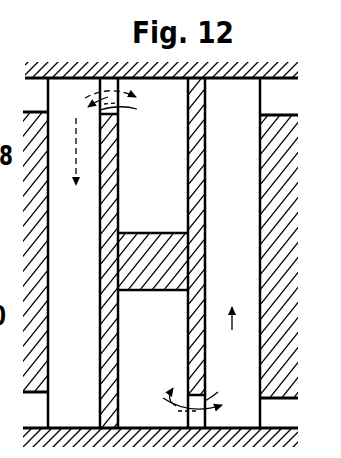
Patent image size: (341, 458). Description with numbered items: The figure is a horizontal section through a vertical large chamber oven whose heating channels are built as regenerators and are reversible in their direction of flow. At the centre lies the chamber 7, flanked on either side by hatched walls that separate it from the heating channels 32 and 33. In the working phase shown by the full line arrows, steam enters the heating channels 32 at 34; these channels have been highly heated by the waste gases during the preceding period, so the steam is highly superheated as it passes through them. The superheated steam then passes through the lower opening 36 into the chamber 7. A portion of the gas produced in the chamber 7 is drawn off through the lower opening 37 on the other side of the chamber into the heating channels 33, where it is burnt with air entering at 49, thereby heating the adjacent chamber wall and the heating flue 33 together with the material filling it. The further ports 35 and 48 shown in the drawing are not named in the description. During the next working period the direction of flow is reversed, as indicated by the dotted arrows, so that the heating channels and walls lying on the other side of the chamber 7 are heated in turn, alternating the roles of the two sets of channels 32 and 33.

The chamber 7 is at (153, 230).
The heating channels 32 is at (68, 253).
The heating channels 33 is at (239, 253).
The steam inlet 34 is at (62, 388).
The upper right port 35 is at (240, 137).
The lower opening 36 is at (125, 103).
The lower opening 37 is at (166, 398).
The upper left port 48 is at (62, 103).
The air inlet 49 is at (242, 415).